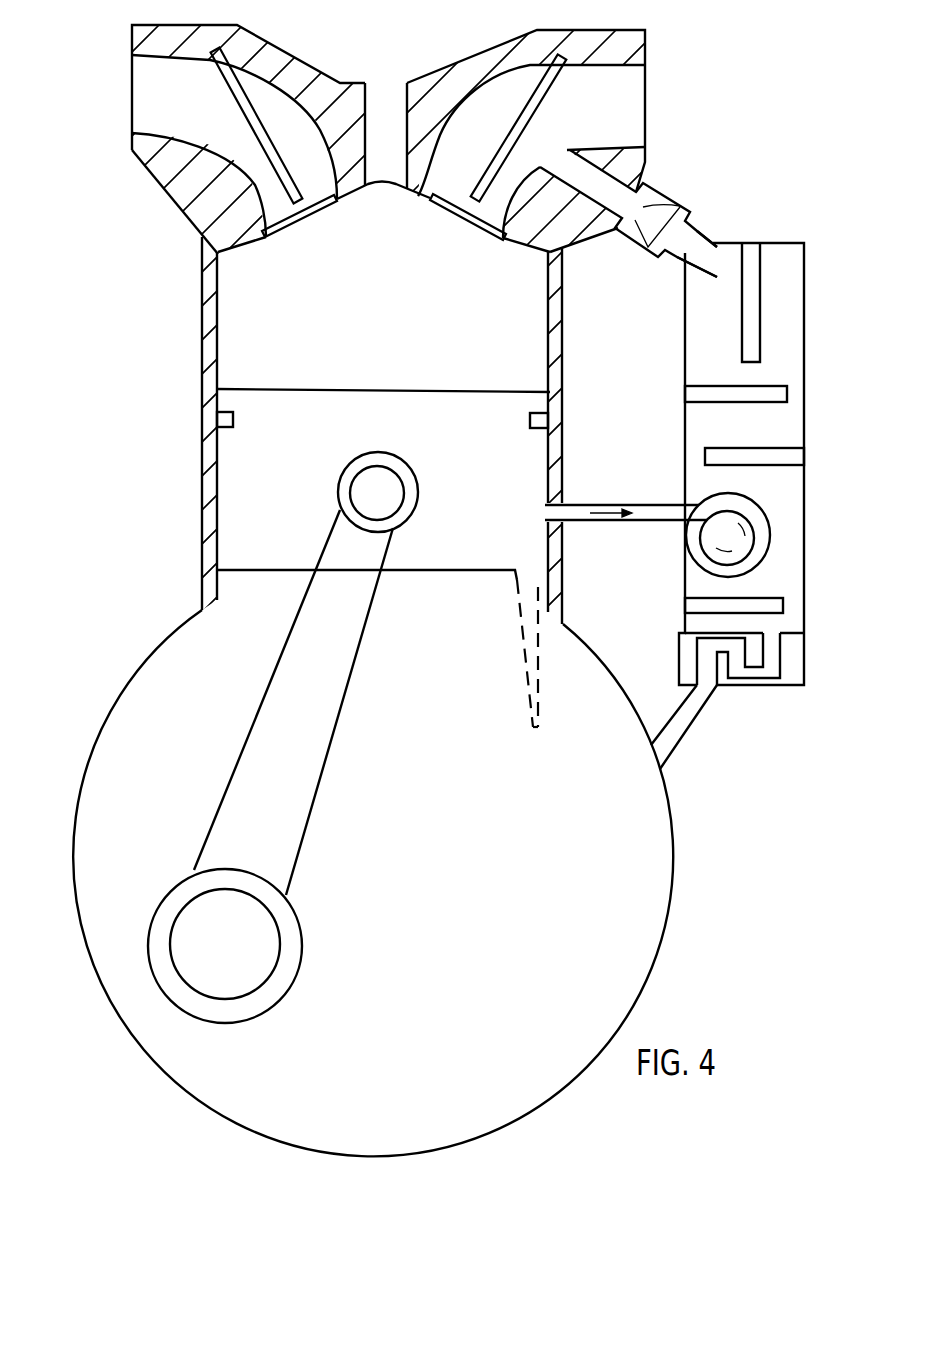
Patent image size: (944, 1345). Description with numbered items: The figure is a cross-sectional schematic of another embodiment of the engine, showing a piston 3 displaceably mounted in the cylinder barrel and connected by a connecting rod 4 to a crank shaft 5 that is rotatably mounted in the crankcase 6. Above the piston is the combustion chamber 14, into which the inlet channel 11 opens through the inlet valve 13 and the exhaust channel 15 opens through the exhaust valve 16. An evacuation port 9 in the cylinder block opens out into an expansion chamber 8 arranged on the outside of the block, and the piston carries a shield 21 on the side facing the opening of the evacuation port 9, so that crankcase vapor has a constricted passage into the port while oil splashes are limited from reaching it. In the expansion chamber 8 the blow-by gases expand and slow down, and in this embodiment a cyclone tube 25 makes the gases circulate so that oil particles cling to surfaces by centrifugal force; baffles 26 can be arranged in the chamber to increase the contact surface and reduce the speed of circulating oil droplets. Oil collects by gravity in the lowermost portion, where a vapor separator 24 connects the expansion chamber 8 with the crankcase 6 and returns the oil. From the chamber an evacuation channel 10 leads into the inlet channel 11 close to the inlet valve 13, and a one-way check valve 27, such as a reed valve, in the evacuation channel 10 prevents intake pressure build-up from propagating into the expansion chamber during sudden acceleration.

The piston 3 is at (466, 392).
The connecting rod 4 is at (310, 776).
The crank shaft 5 is at (249, 952).
The crankcase 6 is at (649, 946).
The expansion chamber 8 is at (697, 322).
The evacuation port 9 is at (593, 503).
The evacuation channel 10 is at (695, 238).
The inlet channel 11 is at (630, 113).
The inlet valve 13 is at (466, 218).
The combustion chamber 14 is at (383, 227).
The exhaust channel 15 is at (142, 102).
The exhaust valve 16 is at (282, 232).
The shield 21 is at (505, 641).
The vapor separator 24 is at (744, 674).
The cyclone tube 25 is at (703, 560).
The baffle 26 is at (772, 456).
The one-way check valve 27 is at (652, 183).